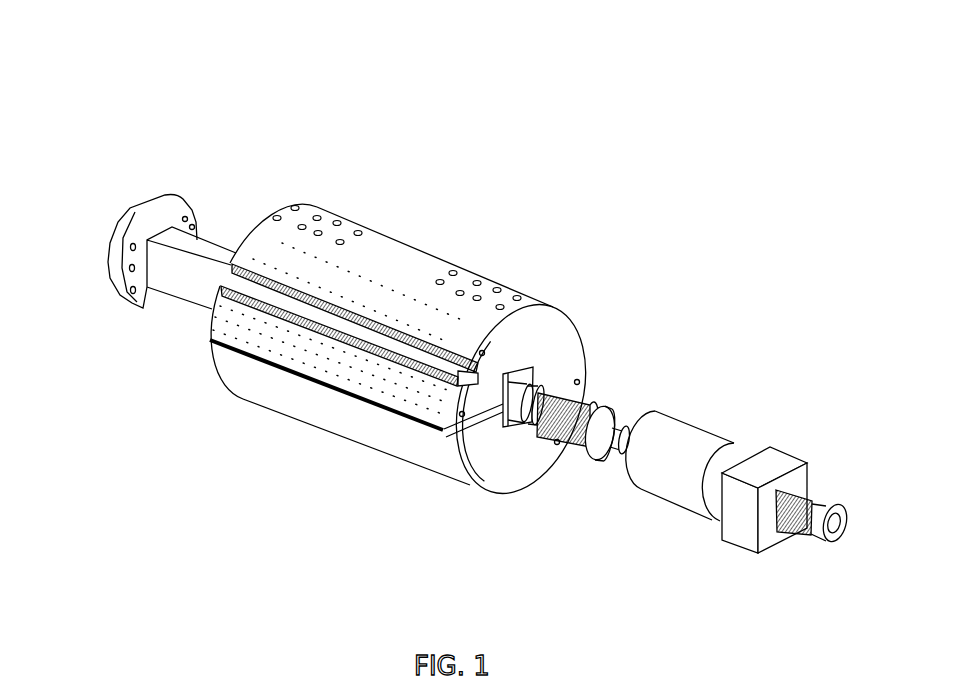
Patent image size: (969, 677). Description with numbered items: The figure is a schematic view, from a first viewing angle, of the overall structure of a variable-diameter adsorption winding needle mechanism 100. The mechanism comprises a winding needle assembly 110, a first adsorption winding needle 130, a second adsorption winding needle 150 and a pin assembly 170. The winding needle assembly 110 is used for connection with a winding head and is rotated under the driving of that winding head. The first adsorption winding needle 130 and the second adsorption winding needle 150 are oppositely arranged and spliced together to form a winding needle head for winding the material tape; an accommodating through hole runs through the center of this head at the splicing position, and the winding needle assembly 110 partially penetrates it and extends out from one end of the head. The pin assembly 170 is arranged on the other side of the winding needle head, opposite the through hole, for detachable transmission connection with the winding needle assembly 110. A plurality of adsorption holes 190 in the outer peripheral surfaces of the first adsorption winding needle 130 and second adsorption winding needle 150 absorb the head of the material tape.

The variable-diameter adsorption winding needle mechanism 100 is at (460, 47).
The winding needle assembly 110 is at (183, 273).
The first adsorption winding needle 130 is at (419, 248).
The second adsorption winding needle 150 is at (407, 465).
The pin assembly 170 is at (680, 433).
The adsorption holes 190 is at (290, 208).